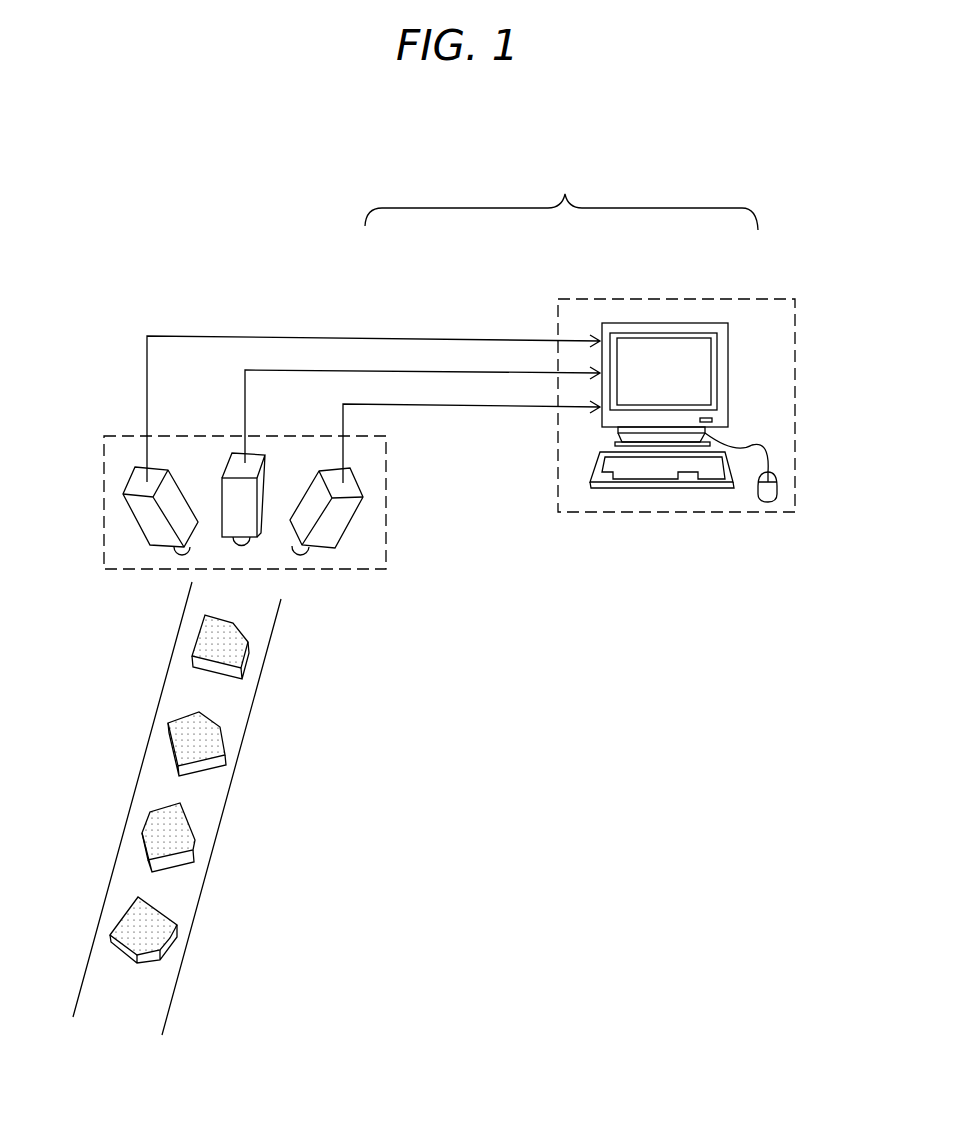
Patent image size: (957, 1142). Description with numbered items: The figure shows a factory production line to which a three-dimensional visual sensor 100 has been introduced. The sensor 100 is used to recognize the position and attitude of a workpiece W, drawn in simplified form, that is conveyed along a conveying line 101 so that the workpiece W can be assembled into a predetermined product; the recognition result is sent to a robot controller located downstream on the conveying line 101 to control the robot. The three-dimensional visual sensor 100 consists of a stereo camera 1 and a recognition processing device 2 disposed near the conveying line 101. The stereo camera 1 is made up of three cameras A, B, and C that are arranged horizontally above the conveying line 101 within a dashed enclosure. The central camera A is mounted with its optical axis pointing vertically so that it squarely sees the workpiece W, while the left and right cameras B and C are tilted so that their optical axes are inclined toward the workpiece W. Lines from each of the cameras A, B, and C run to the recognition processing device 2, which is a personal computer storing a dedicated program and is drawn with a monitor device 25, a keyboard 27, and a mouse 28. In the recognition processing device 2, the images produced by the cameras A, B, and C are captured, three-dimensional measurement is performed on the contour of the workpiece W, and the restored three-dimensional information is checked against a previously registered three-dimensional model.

The three-dimensional visual sensor 100 is at (561, 197).
The stereo camera 1 is at (372, 436).
The recognition processing device 2 is at (745, 299).
The central camera A is at (222, 467).
The left camera B is at (150, 527).
The right camera C is at (335, 530).
The monitor device 25 is at (713, 368).
The keyboard 27 is at (608, 462).
The mouse 28 is at (773, 495).
The conveying line 101 is at (175, 688).
The workpiece W is at (233, 656).